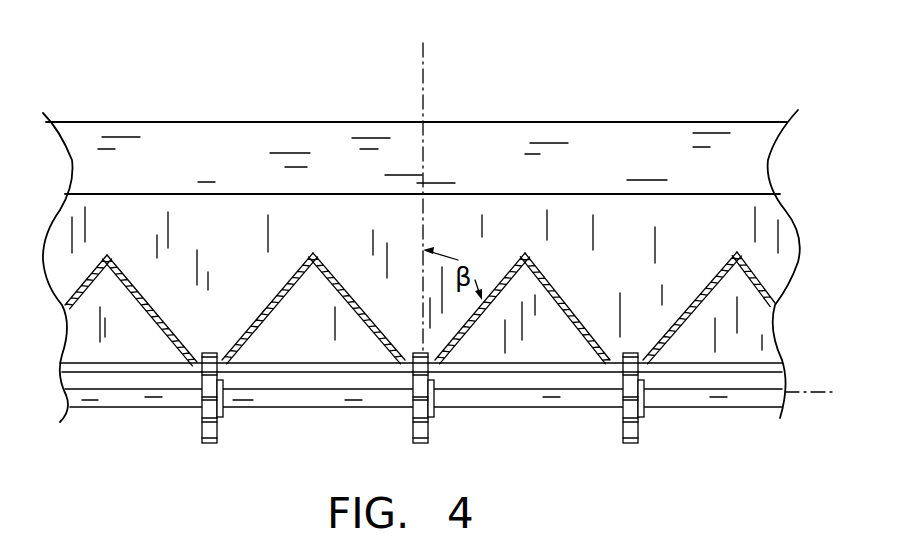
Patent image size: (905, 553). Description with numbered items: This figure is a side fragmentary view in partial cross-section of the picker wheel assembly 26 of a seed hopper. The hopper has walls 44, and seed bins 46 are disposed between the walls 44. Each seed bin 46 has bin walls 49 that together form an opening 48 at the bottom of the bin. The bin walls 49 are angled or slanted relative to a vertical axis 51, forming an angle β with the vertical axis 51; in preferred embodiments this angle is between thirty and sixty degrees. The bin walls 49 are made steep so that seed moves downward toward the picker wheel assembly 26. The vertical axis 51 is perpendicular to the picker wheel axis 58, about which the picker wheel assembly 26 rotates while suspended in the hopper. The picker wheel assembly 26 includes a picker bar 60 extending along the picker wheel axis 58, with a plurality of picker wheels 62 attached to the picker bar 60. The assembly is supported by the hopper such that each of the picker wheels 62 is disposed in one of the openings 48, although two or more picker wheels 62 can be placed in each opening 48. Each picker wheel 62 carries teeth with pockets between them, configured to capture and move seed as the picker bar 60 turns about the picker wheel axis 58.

The picker wheel assembly 26 is at (672, 432).
The walls 44 is at (242, 215).
The seed bin 46 is at (700, 287).
The opening 48 is at (610, 352).
The bin walls 49 is at (257, 325).
The vertical axis 51 is at (423, 63).
The picker wheel axis 58 is at (807, 392).
The picker bar 60 is at (477, 398).
The picker wheels 62 is at (622, 410).